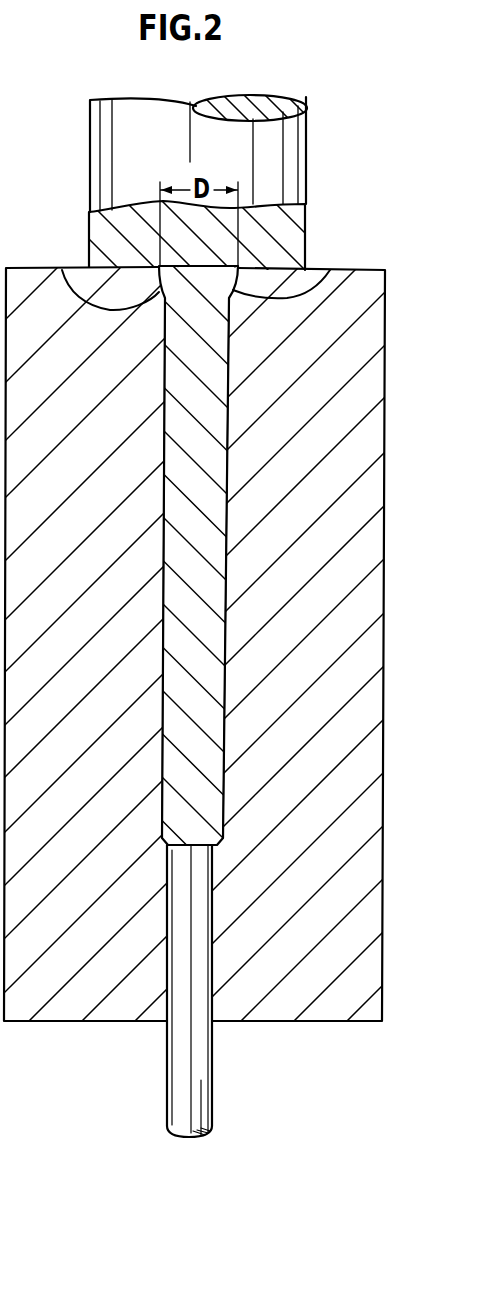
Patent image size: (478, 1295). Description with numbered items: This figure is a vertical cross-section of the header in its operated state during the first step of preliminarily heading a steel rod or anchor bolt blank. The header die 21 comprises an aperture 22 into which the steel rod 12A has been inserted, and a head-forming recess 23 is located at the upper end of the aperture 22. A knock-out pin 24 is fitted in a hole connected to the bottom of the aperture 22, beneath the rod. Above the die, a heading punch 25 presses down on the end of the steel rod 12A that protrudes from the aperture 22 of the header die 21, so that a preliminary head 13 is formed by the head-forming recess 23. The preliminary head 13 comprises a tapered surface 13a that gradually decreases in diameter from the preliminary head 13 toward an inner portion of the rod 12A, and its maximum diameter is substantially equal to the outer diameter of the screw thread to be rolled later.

The steel rod 12A is at (178, 449).
The preliminary head 13 is at (193, 267).
The tapered surface 13a is at (330, 270).
The header die 21 is at (368, 452).
The aperture 22 is at (203, 586).
The head-forming recess 23 is at (62, 270).
The knock-out pin 24 is at (199, 1065).
The heading punch 25 is at (293, 157).